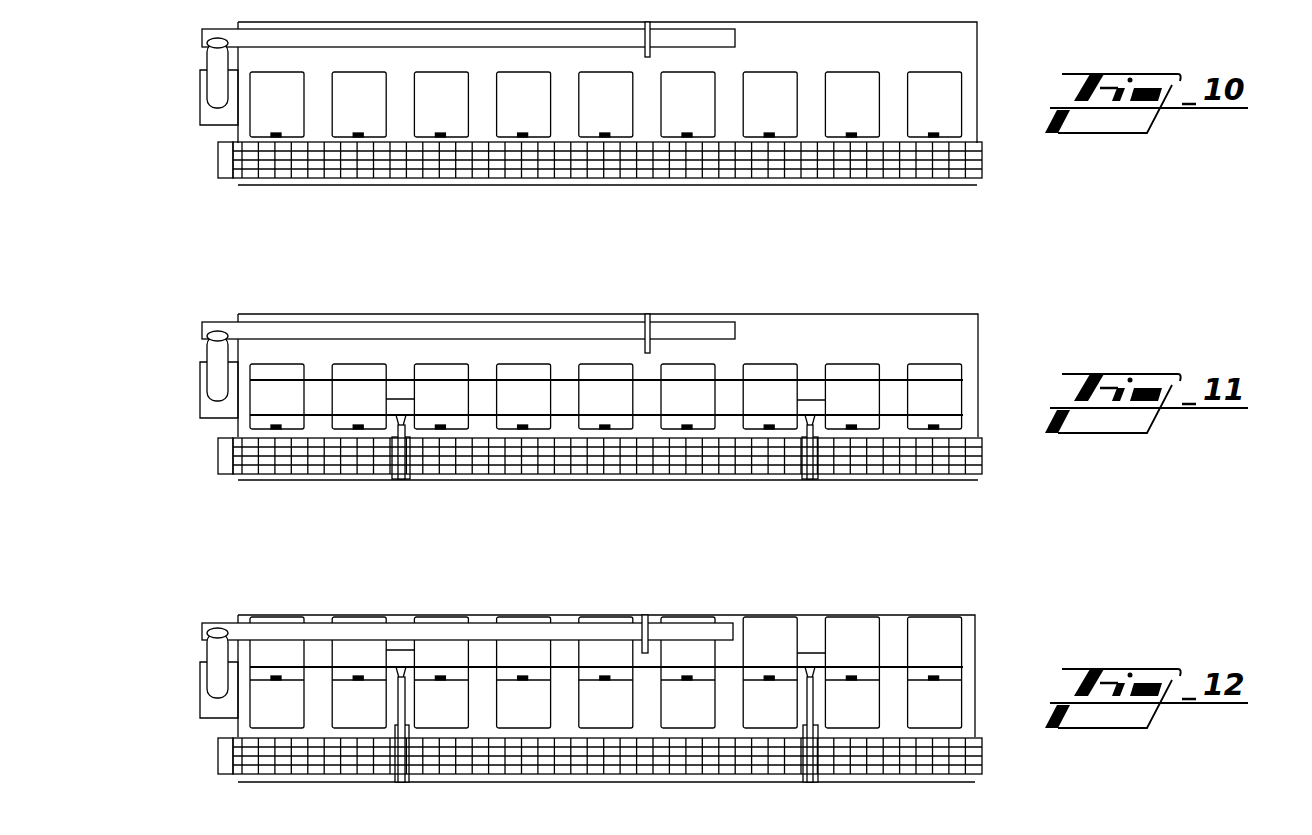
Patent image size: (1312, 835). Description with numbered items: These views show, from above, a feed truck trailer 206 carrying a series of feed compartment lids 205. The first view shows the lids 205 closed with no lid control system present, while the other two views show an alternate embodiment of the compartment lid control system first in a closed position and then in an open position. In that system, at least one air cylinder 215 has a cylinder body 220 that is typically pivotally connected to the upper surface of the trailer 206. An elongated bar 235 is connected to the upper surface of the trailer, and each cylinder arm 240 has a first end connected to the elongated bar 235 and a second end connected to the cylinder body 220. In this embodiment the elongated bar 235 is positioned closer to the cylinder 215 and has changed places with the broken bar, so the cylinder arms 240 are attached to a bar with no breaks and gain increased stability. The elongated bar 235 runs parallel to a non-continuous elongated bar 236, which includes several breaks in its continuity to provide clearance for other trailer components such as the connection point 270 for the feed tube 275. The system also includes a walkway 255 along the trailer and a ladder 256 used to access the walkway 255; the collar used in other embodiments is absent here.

In FIG. 10, the feed compartment lid 205 is at (960, 112).
In FIG. 11, the feed compartment lid 205 is at (630, 405).
In FIG. 12, the feed compartment lid 205 is at (874, 655).
In FIG. 10, the feed truck trailer 206 is at (649, 138).
In FIG. 11, the air cylinder 215 is at (412, 499).
In FIG. 12, the air cylinder 215 is at (810, 782).
In FIG. 11, the cylinder body 220 is at (400, 462).
In FIG. 12, the cylinder body 220 is at (815, 753).
In FIG. 11, the elongated bar 235 is at (967, 415).
In FIG. 11, the non-continuous elongated bar 236 is at (892, 380).
In FIG. 12, the non-continuous elongated bar 236 is at (938, 628).
In FIG. 11, the cylinder arm 240 is at (402, 416).
In FIG. 12, the cylinder arm 240 is at (605, 664).
In FIG. 10, the walkway 255 is at (945, 172).
In FIG. 11, the walkway 255 is at (923, 463).
In FIG. 12, the walkway 255 is at (983, 760).
In FIG. 10, the ladder 256 is at (217, 165).
In FIG. 11, the ladder 256 is at (217, 463).
In FIG. 12, the ladder 256 is at (217, 750).
In FIG. 10, the connection point 270 is at (650, 54).
In FIG. 11, the connection point 270 is at (646, 318).
In FIG. 12, the connection point 270 is at (645, 614).
In FIG. 10, the feed tube 275 is at (577, 40).
In FIG. 11, the feed tube 275 is at (583, 333).
In FIG. 12, the feed tube 275 is at (688, 628).